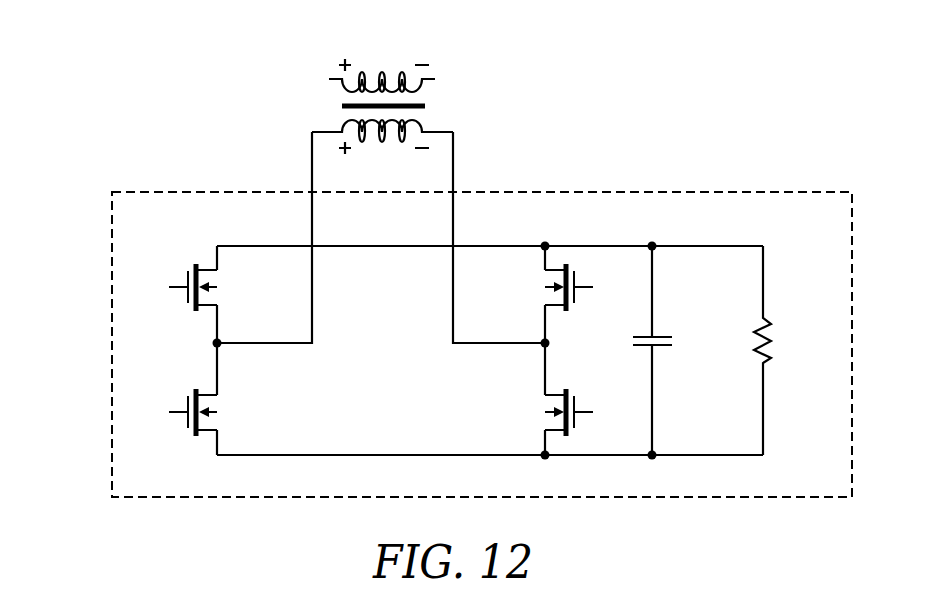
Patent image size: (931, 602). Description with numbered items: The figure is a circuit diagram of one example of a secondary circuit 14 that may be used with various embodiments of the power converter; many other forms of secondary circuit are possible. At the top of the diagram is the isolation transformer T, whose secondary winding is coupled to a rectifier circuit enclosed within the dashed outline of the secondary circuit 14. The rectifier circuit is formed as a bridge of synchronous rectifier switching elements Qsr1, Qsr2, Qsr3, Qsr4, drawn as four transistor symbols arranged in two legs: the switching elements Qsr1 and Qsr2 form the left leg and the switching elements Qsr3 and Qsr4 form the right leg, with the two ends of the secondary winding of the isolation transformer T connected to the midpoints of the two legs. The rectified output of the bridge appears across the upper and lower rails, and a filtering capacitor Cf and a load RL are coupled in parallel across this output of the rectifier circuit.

The secondary circuit 14 is at (447, 344).
The isolation transformer T is at (382, 106).
The synchronous rectifier switching element Qsr1 is at (221, 287).
The synchronous rectifier switching element Qsr2 is at (221, 412).
The synchronous rectifier switching element Qsr3 is at (541, 287).
The synchronous rectifier switching element Qsr4 is at (541, 412).
The filtering capacitor Cf is at (668, 350).
The load RL is at (783, 350).